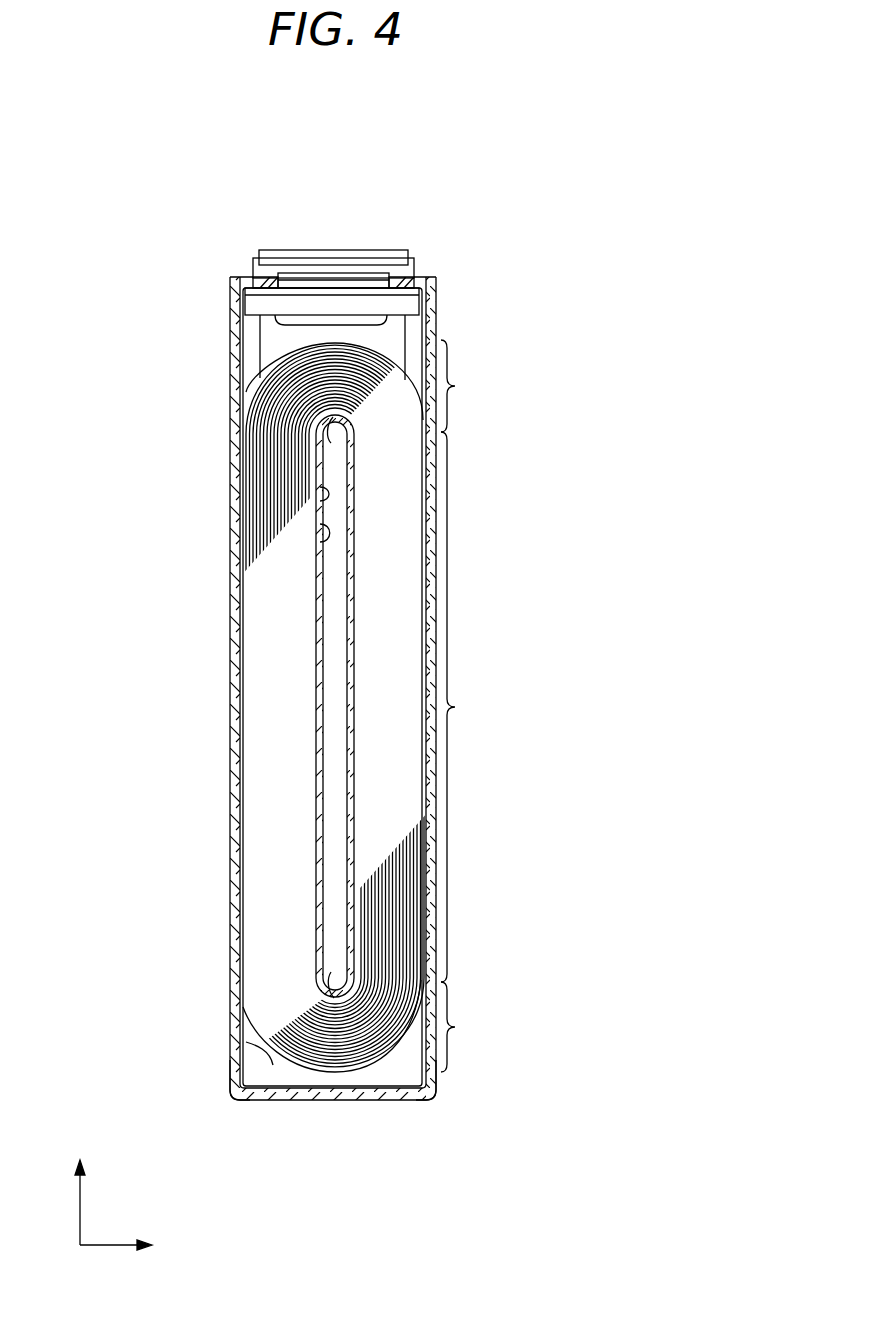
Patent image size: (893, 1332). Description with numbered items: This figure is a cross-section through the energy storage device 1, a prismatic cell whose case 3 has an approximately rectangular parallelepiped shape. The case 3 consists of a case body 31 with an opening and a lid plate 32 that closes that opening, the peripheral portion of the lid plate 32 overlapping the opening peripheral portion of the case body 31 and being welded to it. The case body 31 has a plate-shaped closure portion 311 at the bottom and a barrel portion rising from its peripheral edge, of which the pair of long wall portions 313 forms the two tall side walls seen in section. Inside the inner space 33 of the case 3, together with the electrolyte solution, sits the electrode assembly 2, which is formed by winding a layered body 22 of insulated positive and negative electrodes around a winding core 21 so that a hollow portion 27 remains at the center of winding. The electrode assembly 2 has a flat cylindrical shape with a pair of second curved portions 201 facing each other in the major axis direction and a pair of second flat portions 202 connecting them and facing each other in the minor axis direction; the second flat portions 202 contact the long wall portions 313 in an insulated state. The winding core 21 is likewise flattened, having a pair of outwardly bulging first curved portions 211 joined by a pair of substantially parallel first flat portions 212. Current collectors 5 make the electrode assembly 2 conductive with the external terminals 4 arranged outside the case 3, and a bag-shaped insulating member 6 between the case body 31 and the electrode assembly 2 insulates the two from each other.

The energy storage device 1 is at (468, 162).
The electrode assembly 2 is at (111, 375).
The case 3 is at (101, 197).
The external terminal 4 is at (326, 249).
The current collector 5 is at (248, 351).
The insulating member 6 is at (273, 1065).
The winding core 21 is at (302, 472).
The layered body 22 is at (281, 346).
The hollow portion 27 is at (328, 725).
The case body 31 is at (218, 330).
The lid plate 32 is at (233, 265).
The inner space 33 is at (258, 1067).
The second curved portion 201 is at (468, 706).
The second flat portion 202 is at (466, 707).
The first curved portion 211 is at (333, 417).
The first flat portion 212 is at (318, 533).
The closure portion 311 is at (338, 1100).
The long wall portion 313 is at (230, 1006).